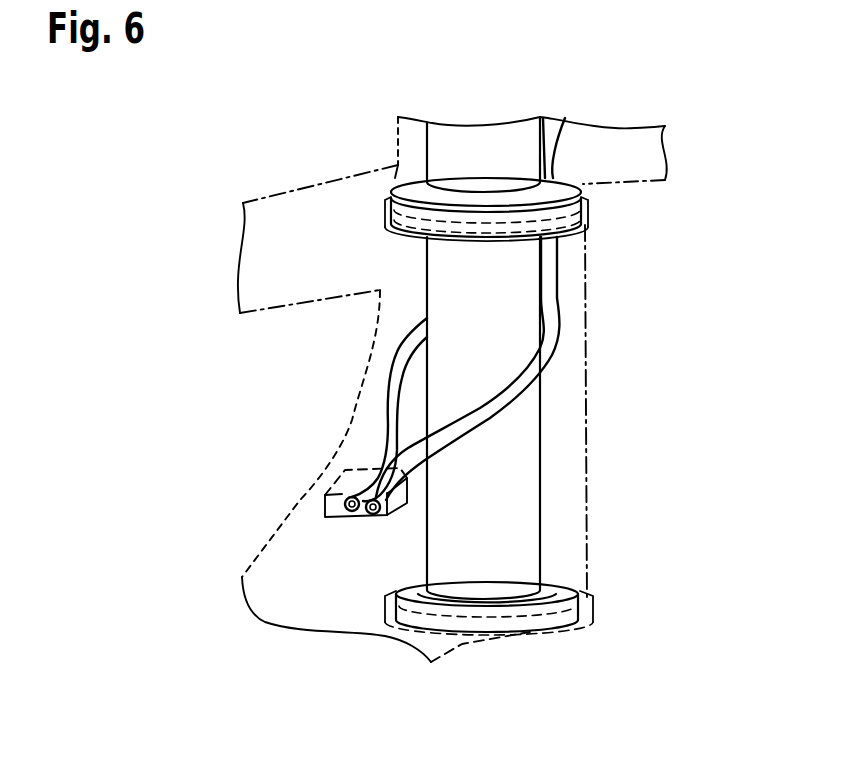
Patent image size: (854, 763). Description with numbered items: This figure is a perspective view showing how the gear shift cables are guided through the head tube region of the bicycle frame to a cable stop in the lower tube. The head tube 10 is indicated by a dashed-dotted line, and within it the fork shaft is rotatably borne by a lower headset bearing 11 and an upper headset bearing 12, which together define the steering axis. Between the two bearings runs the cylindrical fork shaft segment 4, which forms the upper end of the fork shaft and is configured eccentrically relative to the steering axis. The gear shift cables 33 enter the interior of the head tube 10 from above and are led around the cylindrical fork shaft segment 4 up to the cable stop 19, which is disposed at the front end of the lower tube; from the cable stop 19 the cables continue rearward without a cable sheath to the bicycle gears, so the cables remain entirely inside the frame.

The cylindrical fork shaft segment 4 is at (518, 452).
The head tube 10 is at (587, 350).
The lower headset bearing 11 is at (575, 612).
The upper headset bearing 12 is at (568, 217).
The cable stop 19 is at (352, 483).
The gear shift cables 33 is at (402, 442).